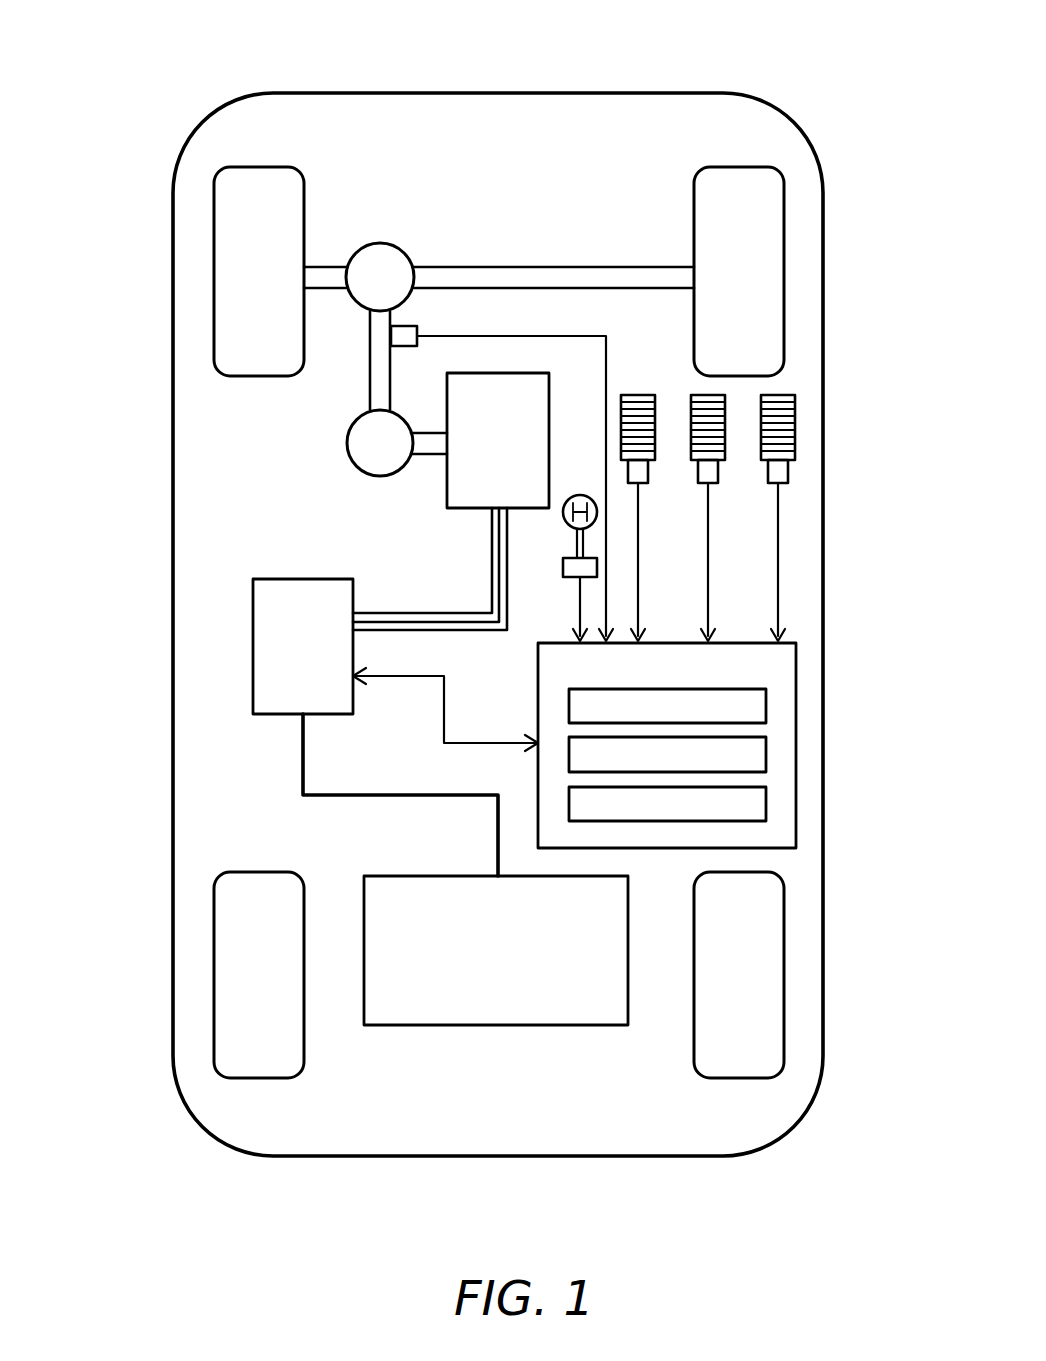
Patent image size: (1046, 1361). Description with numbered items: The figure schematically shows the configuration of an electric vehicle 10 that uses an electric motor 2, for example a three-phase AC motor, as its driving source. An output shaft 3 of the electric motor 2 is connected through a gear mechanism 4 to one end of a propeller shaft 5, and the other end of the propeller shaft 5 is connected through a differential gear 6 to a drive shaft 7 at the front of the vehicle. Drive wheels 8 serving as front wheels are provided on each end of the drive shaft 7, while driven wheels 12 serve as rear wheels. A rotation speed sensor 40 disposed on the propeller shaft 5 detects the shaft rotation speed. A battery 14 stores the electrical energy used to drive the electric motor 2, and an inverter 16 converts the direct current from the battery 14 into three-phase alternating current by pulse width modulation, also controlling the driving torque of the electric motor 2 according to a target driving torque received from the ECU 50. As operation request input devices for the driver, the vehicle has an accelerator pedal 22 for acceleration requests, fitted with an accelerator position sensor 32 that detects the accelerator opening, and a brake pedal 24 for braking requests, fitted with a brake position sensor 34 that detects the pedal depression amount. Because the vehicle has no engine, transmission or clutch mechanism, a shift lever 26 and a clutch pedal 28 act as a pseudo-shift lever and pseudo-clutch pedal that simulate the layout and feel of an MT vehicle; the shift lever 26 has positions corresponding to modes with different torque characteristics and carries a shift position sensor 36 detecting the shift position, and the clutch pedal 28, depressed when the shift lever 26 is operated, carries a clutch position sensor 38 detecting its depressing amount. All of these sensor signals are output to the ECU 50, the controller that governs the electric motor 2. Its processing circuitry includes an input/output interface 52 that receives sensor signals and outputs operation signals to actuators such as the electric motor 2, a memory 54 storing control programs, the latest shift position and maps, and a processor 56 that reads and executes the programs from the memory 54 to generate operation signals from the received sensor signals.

The electric motor 2 is at (458, 510).
The output shaft 3 is at (432, 452).
The gear mechanism 4 is at (350, 432).
The propeller shaft 5 is at (370, 390).
The differential gear 6 is at (380, 243).
The drive shaft 7 is at (515, 266).
The drive wheels 8 is at (214, 223).
The electric vehicle 10 is at (807, 88).
The driven wheels 12 is at (214, 940).
The battery 14 is at (496, 1025).
The inverter 16 is at (253, 645).
The accelerator pedal 22 is at (795, 415).
The brake pedal 24 is at (725, 398).
The shift lever 26 is at (581, 495).
The clutch pedal 28 is at (633, 395).
The accelerator position sensor 32 is at (788, 470).
The brake position sensor 34 is at (708, 485).
The shift position sensor 36 is at (597, 572).
The clutch position sensor 38 is at (638, 485).
The rotation speed sensor 40 is at (410, 326).
The ECU 50 is at (796, 677).
The input/output interface 52 is at (766, 710).
The memory 54 is at (766, 758).
The processor 56 is at (766, 803).